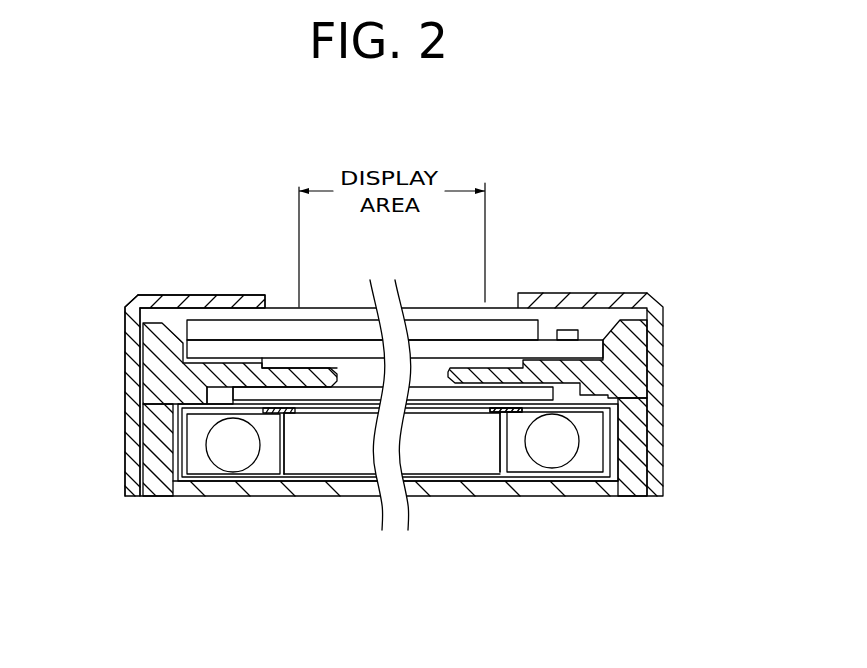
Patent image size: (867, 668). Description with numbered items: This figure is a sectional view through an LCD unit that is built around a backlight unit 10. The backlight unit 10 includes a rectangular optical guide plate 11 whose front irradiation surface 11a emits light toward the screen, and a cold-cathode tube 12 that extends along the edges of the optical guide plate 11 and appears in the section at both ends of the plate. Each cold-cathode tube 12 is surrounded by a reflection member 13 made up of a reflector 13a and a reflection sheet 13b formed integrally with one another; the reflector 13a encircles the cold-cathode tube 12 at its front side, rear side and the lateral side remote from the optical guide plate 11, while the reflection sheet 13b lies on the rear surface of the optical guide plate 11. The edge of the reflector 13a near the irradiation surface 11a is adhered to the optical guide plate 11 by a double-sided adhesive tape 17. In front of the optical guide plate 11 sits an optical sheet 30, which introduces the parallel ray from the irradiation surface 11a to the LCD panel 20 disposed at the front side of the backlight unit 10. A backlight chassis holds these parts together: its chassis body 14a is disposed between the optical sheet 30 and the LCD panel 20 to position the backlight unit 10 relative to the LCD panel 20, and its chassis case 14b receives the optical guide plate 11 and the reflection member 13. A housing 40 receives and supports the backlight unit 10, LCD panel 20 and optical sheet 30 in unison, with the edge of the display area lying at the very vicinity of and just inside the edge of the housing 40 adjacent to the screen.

The backlight unit 10 is at (630, 518).
The optical guide plate 11 is at (422, 460).
The front irradiation surface 11a is at (456, 408).
The cold-cathode tube 12 is at (228, 453).
The reflection member 13 is at (541, 495).
The reflector 13a is at (177, 442).
The reflection sheet 13b is at (310, 473).
The chassis body 14a is at (126, 320).
The chassis case 14b is at (157, 473).
The double-sided adhesive tape 17 is at (293, 415).
The LCD panel 20 is at (285, 333).
The optical sheet 30 is at (352, 398).
The housing 40 is at (170, 300).